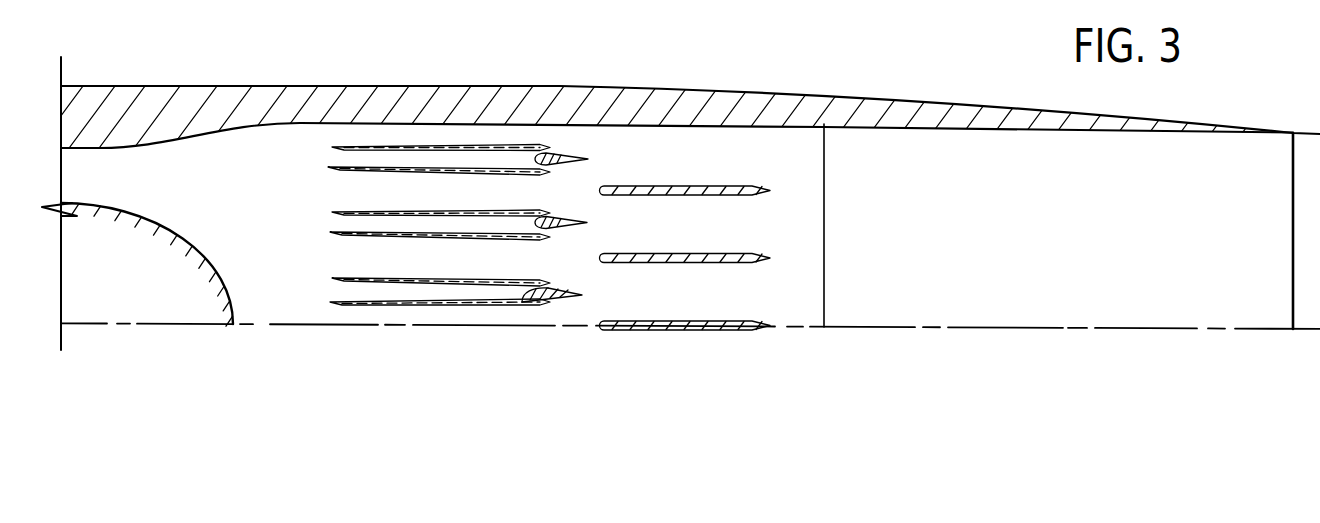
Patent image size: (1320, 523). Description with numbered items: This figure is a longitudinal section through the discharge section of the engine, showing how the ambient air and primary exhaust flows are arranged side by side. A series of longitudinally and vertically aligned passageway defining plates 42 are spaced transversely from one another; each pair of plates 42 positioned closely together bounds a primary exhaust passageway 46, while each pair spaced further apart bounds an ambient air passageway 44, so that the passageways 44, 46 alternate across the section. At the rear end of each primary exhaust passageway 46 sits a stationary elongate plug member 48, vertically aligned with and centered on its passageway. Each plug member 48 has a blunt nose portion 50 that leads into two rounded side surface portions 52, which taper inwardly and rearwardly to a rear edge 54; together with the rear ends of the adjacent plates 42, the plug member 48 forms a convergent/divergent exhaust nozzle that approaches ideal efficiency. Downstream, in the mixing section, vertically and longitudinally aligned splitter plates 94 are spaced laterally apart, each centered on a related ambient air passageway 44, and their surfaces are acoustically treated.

The passageway defining plates 42 is at (386, 174).
The ambient air passageways 44 is at (340, 188).
The primary exhaust passageways 46 is at (340, 156).
The stationary elongate plug member 48 is at (564, 220).
The blunt nose portion 50 is at (520, 305).
The rounded side surface portions 52 is at (545, 305).
The rear edge 54 is at (585, 295).
The splitter plates 94 is at (747, 260).